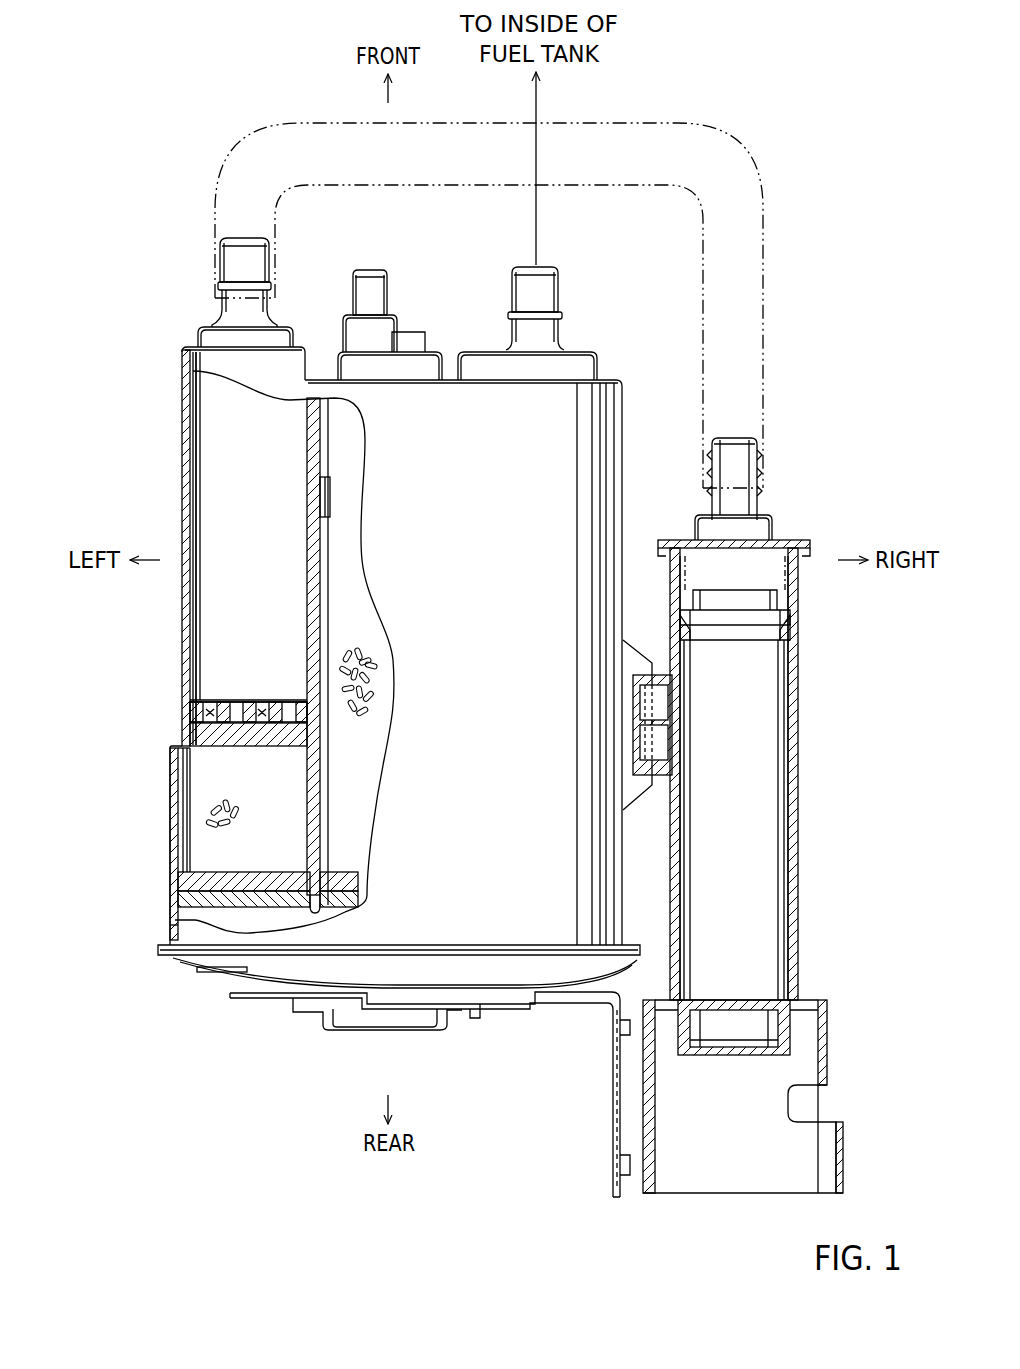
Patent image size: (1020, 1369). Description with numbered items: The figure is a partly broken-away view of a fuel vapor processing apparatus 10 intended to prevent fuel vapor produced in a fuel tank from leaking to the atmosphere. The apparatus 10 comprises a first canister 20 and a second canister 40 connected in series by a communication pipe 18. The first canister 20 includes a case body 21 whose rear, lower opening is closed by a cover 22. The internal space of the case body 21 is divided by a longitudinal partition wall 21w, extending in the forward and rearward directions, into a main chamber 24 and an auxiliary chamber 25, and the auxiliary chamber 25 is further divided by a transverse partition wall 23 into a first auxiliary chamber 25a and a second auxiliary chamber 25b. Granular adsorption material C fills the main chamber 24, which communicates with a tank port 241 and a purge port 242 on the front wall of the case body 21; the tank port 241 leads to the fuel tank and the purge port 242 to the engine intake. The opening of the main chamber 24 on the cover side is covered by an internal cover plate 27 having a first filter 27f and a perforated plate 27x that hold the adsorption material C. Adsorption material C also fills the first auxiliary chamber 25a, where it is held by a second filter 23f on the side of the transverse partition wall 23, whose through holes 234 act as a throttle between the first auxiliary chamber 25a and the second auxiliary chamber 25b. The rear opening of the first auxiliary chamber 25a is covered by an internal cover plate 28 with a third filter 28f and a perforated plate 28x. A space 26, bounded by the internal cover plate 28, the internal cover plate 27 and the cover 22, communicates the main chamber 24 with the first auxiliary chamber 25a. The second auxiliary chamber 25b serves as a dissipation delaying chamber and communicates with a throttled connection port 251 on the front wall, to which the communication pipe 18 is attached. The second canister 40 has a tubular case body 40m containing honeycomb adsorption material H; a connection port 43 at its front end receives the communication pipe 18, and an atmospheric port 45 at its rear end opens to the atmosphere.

The fuel vapor processing apparatus 10 is at (489, 265).
The communication pipe 18 is at (320, 140).
The first canister 20 is at (622, 335).
The case body 21 is at (181, 476).
The longitudinal partition wall 21w is at (312, 548).
The cover 22 is at (400, 972).
The transverse partition wall 23 is at (206, 674).
The second filter 23f is at (202, 733).
The main chamber 24 is at (340, 600).
The auxiliary chamber 25 is at (228, 617).
The first auxiliary chamber 25a is at (208, 778).
The second auxiliary chamber 25b is at (232, 430).
The space 26 is at (268, 918).
The internal cover plate 27 is at (386, 864).
The first filter 27f is at (355, 882).
The perforated plate 27x is at (340, 897).
The internal cover plate 28 is at (217, 926).
The third filter 28f is at (258, 880).
The perforated plate 28x is at (232, 903).
The second canister 40 is at (766, 792).
The tubular case body 40m is at (797, 675).
The connection port 43 is at (757, 462).
The atmospheric port 45 is at (790, 1036).
The through holes 234 is at (210, 708).
The tank port 241 is at (530, 290).
The purge port 242 is at (370, 285).
The connection port 251 is at (245, 265).
The adsorption material C is at (372, 680).
The honeycomb adsorption material H is at (752, 730).